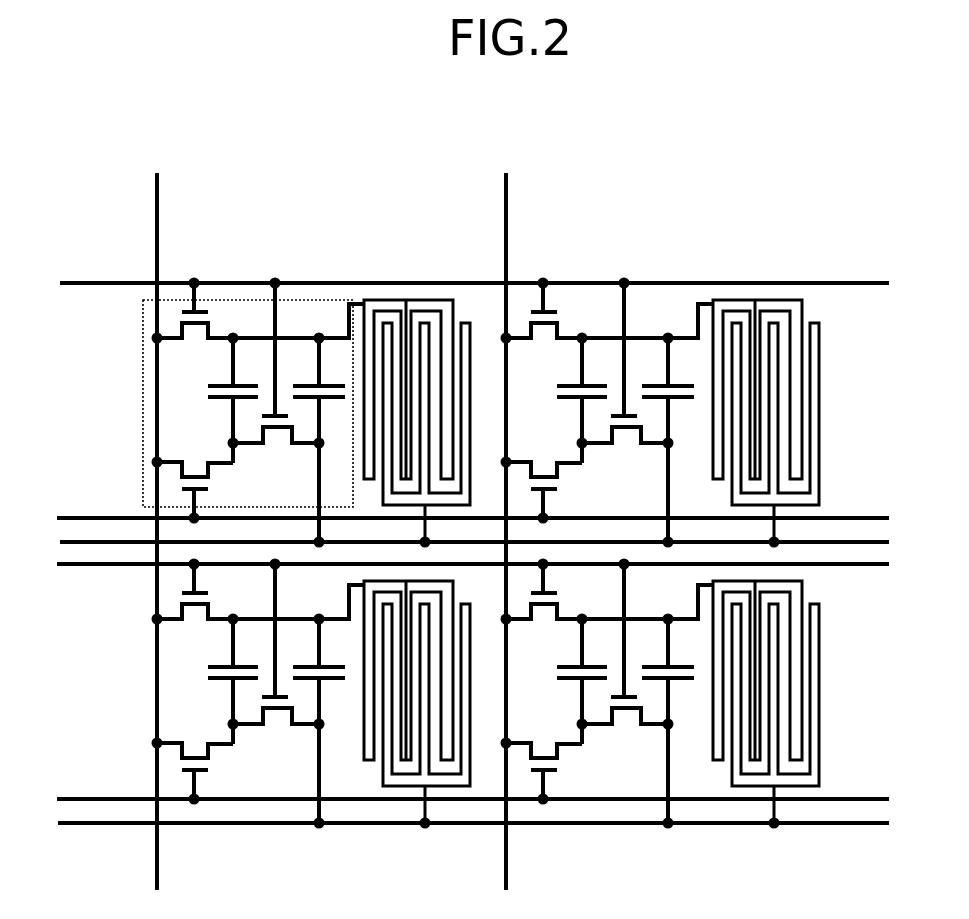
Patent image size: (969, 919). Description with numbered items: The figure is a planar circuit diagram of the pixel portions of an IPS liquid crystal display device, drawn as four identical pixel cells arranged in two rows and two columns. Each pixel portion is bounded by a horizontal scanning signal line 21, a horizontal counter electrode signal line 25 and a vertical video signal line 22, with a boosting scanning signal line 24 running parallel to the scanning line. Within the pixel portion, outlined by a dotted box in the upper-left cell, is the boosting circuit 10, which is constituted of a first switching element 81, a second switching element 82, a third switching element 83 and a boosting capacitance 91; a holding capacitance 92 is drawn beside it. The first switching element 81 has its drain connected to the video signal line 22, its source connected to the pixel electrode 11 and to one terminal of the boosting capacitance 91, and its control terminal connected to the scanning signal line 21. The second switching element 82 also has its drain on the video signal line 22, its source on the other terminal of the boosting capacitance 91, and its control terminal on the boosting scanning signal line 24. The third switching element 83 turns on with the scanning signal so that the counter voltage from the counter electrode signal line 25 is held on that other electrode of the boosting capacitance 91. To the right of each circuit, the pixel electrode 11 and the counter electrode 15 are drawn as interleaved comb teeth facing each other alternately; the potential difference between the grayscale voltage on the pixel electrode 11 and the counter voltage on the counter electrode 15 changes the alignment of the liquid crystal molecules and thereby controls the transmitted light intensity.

The boosting circuit 10 is at (210, 403).
The pixel electrode 11 is at (408, 343).
The counter electrode 15 is at (430, 378).
The scanning signal line 21 is at (76, 280).
The video signal line 22 is at (158, 196).
The boosting scanning signal line 24 is at (85, 520).
The counter electrode signal line 25 is at (112, 544).
The first switching element 81 is at (207, 311).
The second switching element 82 is at (141, 490).
The third switching element 83 is at (293, 323).
The boosting capacitance 91 is at (244, 341).
The holding capacitance 92 is at (332, 375).